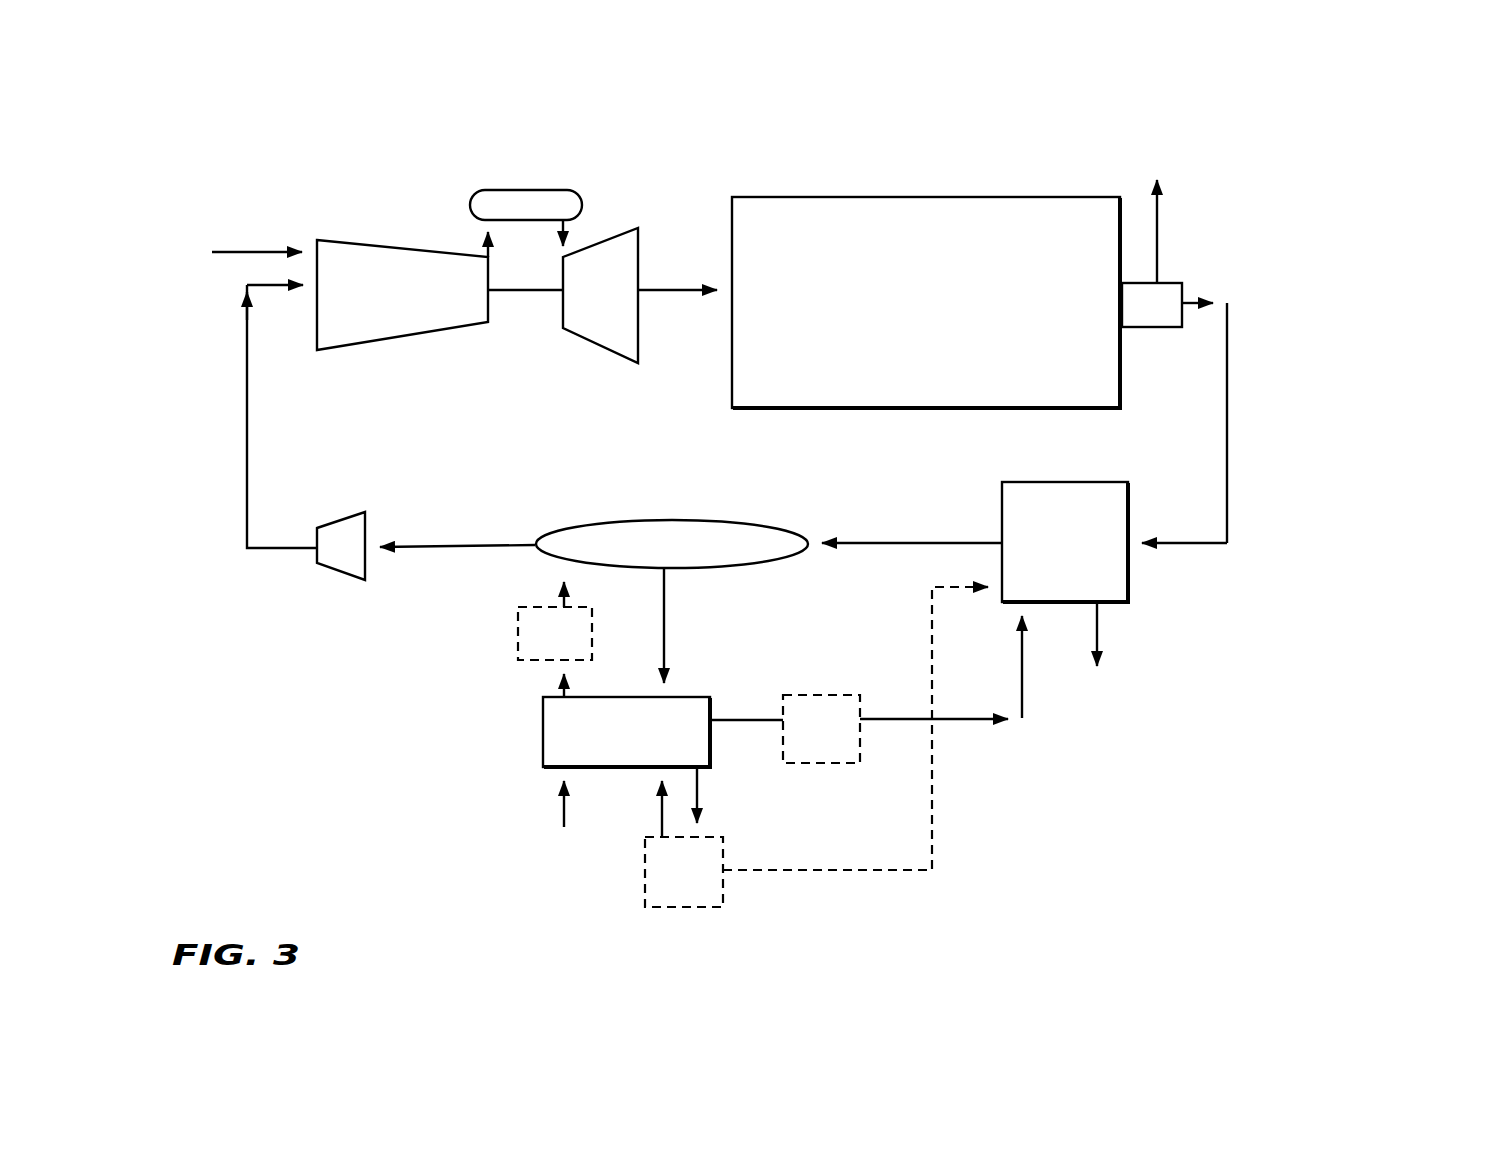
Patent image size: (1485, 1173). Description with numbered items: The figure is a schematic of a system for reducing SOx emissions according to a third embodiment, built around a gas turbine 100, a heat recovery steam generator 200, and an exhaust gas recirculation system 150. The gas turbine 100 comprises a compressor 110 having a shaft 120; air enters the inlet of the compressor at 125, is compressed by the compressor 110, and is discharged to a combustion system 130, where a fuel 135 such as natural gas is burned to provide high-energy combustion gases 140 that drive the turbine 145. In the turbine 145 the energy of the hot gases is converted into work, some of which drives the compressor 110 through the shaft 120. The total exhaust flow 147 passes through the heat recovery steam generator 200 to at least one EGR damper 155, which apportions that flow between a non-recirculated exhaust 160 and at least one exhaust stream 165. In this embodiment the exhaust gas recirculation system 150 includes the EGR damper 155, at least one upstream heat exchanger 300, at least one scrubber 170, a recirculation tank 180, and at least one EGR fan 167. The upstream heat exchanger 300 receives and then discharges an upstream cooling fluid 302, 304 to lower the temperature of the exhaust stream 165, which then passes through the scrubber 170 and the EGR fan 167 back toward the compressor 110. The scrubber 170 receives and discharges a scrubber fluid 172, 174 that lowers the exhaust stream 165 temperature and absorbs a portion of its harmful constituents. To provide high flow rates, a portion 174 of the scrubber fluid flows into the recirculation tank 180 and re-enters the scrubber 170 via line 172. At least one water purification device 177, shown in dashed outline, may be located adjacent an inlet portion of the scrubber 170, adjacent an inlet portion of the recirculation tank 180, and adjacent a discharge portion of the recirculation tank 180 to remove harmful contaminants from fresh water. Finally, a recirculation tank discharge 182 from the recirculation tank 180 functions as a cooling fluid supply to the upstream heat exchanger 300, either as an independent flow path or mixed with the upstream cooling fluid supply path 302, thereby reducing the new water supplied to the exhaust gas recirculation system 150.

The gas turbine 100 is at (228, 178).
The compressor 110 is at (354, 306).
The shaft 120 is at (525, 291).
The compressor inlet 125 is at (480, 255).
The combustion system 130 is at (533, 190).
The fuel 135 is at (462, 187).
The combustion gases 140 is at (568, 230).
The turbine 145 is at (584, 306).
The total exhaust flow 147 is at (668, 291).
The exhaust gas recirculation system 150 is at (1345, 298).
The EGR damper 155 is at (1128, 318).
The non-recirculated exhaust 160 is at (1159, 208).
The exhaust stream 165 is at (1188, 297).
The EGR fan 167 is at (332, 568).
The scrubber 170 is at (646, 558).
The scrubber fluid line 172 is at (564, 596).
The scrubber fluid portion 174 is at (664, 632).
The water purification device 177 is at (531, 651).
The recirculation tank 180 is at (601, 751).
The recirculation tank discharge 182 is at (697, 797).
The heat recovery steam generator 200 is at (889, 316).
The upstream heat exchanger 300 is at (1040, 554).
The upstream cooling fluid supply path 302 is at (1022, 660).
The upstream cooling fluid discharge 304 is at (1100, 638).